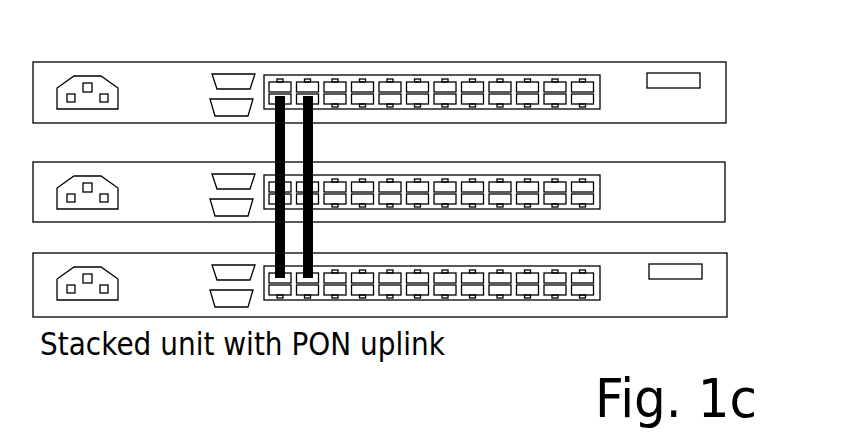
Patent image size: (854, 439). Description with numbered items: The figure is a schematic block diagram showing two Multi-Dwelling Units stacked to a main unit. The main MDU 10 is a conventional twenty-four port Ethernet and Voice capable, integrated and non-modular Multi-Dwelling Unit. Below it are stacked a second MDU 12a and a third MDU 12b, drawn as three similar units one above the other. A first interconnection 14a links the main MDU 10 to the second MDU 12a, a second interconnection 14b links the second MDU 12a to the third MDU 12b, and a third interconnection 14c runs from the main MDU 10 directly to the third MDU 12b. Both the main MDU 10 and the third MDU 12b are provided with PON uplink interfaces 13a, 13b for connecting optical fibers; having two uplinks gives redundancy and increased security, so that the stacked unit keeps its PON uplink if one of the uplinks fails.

The main MDU 10 is at (376, 62).
The second MDU 12a is at (725, 192).
The third MDU 12b is at (569, 317).
The PON uplink interface 13a is at (700, 73).
The PON uplink interface 13b is at (700, 270).
The first interconnection 14a is at (271, 140).
The second interconnection 14b is at (274, 238).
The third interconnection 14c is at (312, 140).